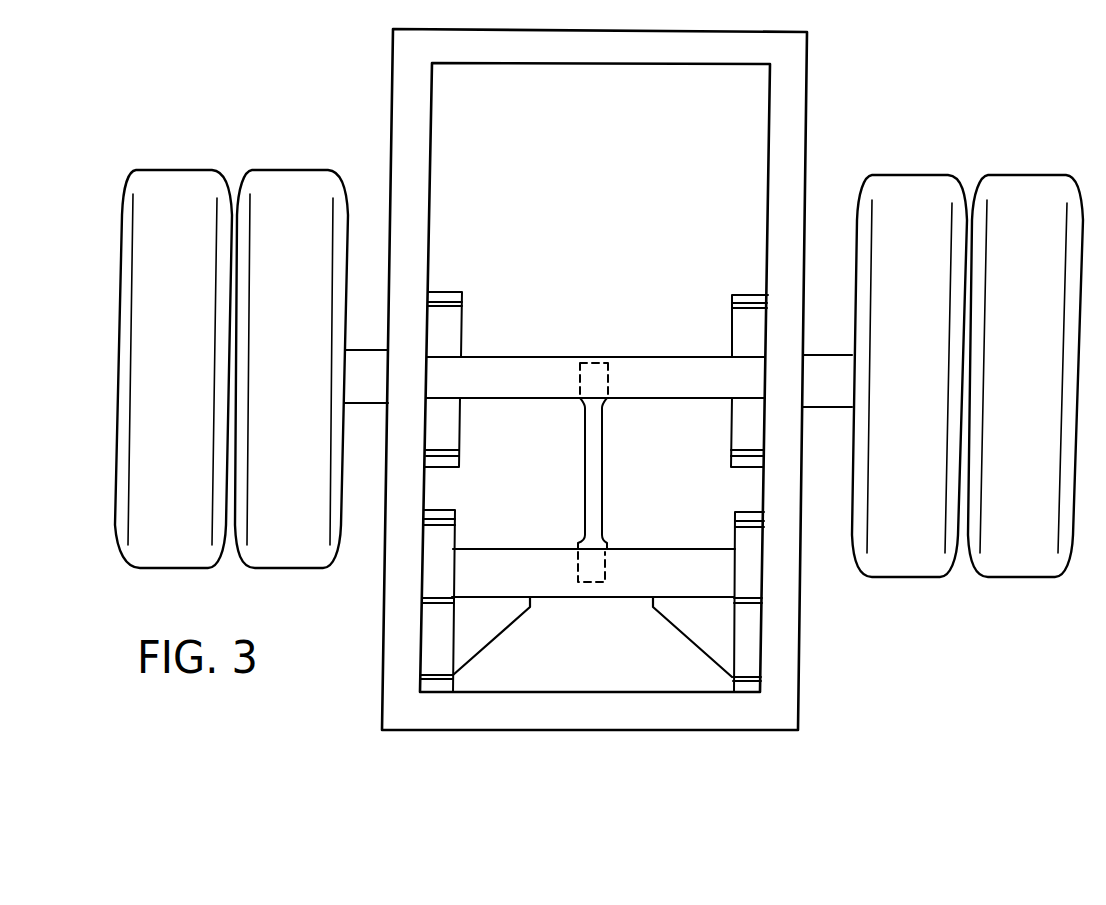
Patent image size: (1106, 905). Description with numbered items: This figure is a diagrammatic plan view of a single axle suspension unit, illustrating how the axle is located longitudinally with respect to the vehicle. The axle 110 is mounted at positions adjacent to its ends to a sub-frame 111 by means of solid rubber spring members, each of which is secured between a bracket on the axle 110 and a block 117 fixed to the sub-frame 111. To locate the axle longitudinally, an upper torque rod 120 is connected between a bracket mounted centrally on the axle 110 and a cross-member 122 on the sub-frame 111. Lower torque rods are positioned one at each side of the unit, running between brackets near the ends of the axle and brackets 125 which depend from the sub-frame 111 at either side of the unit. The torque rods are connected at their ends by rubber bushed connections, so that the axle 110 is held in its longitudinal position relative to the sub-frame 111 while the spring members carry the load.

The axle 110 is at (552, 368).
The sub-frame 111 is at (408, 133).
The block 117 is at (452, 325).
The upper torque rod 120 is at (586, 470).
The cross-member 122 is at (629, 587).
The bracket 125 is at (430, 653).